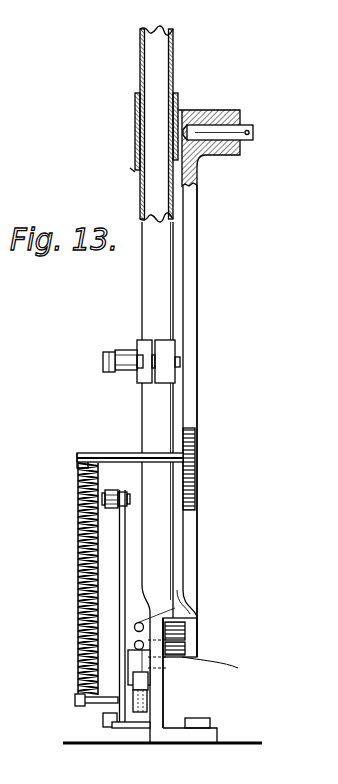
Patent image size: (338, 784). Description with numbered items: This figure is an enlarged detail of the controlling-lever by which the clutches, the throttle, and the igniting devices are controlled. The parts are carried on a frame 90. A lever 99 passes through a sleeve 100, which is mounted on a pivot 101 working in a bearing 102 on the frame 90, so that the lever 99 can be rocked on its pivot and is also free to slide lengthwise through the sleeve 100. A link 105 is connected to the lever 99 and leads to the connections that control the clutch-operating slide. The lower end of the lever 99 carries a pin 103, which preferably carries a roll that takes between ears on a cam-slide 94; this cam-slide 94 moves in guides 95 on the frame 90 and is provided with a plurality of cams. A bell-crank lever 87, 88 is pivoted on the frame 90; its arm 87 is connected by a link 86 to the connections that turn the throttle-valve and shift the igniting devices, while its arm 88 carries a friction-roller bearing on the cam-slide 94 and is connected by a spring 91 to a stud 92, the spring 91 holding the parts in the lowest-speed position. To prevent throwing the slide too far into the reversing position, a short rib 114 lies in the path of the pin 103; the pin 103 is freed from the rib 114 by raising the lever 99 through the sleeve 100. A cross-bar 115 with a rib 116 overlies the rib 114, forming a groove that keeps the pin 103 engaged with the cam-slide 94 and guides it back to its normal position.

The frame 90 is at (198, 300).
The lever 99 is at (140, 65).
The sleeve 100 is at (135, 128).
The pivot 101 is at (247, 126).
The bearing 102 is at (209, 135).
The link 105 is at (128, 343).
The stud 92 is at (122, 453).
The link 86 is at (122, 491).
The bell-crank lever arm 87 is at (120, 572).
The spring 91 is at (78, 605).
The cross-bar 115 is at (197, 617).
The rib 116 is at (185, 627).
The pin 103 is at (187, 652).
The rib 114 is at (222, 668).
The guides 95 is at (132, 660).
The cam-slide 94 is at (148, 685).
The bell-crank lever arm 88 is at (140, 690).